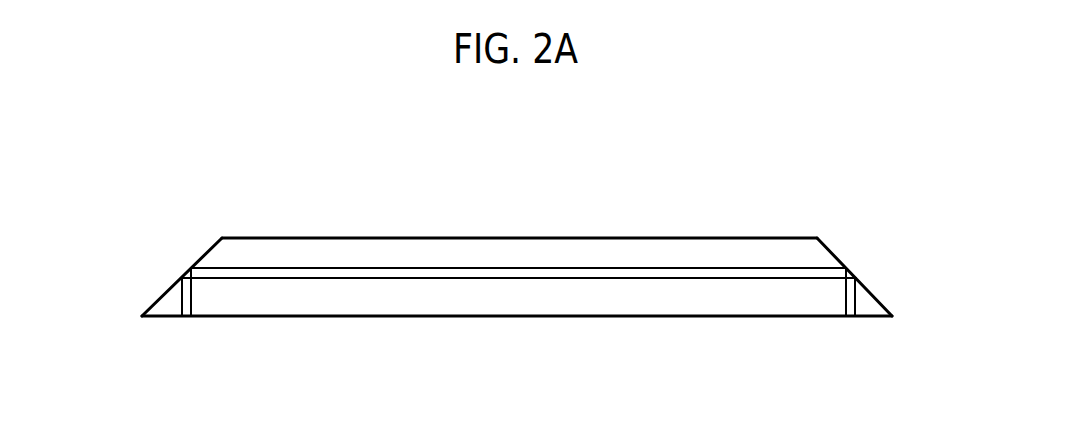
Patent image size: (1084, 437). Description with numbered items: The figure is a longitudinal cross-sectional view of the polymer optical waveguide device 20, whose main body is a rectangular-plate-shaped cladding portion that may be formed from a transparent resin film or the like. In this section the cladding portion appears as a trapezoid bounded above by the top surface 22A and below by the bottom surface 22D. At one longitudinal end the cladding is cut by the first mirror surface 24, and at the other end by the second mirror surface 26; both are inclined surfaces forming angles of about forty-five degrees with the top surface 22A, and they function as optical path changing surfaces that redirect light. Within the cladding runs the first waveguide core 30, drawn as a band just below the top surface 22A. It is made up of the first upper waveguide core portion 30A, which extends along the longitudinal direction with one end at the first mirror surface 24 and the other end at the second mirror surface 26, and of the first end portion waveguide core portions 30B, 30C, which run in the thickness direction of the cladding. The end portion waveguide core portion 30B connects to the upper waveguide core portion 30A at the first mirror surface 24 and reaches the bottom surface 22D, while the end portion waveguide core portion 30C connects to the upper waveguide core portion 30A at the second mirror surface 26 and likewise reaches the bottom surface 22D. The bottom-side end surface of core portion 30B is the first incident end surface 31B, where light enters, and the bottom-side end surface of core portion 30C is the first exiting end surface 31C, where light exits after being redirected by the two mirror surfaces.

The optical waveguide device 20 is at (277, 173).
The top surface 22A is at (685, 238).
The bottom surface 22D is at (480, 316).
The first mirror surface 24 is at (204, 256).
The second mirror surface 26 is at (836, 257).
The first waveguide core 30 is at (465, 268).
The first upper waveguide core portion 30A is at (568, 268).
The first end portion waveguide core portion 30B is at (177, 302).
The first end portion waveguide core portion 30C is at (862, 302).
The first incident end surface 31B is at (186, 317).
The first exiting end surface 31C is at (848, 317).